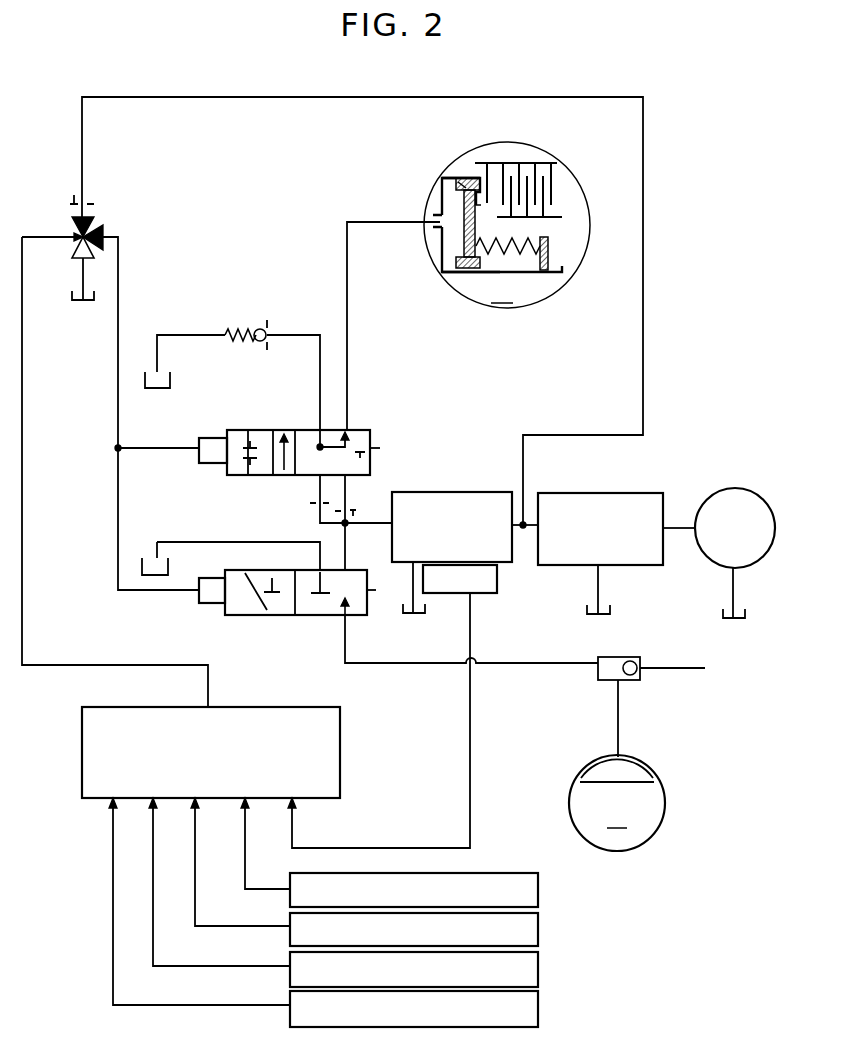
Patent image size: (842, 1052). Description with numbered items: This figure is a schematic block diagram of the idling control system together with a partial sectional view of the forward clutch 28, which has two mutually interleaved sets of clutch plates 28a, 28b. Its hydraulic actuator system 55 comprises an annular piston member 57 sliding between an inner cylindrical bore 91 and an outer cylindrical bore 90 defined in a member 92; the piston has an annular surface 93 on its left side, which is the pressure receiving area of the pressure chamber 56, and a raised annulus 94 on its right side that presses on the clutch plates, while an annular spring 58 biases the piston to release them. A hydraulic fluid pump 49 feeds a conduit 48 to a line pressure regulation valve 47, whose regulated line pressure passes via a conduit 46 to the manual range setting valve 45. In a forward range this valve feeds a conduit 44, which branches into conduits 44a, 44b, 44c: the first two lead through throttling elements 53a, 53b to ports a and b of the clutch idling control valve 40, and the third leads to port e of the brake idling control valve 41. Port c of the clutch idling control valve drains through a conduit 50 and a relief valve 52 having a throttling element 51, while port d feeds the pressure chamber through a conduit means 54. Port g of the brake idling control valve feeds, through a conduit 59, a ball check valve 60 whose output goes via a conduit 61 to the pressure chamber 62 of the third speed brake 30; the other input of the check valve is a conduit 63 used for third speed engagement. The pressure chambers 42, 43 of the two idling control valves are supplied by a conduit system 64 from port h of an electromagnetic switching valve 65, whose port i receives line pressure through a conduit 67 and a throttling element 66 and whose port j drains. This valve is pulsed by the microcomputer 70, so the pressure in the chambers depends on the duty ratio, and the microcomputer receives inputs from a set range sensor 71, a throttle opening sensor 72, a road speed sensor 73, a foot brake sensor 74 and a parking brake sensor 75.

The forward hydraulic clutch 28 is at (507, 226).
The set of annular clutch plates 28a is at (545, 178).
The set of annular clutch plates 28b is at (550, 204).
The third speed brake 30 is at (640, 791).
The clutch idling control valve 40 is at (372, 435).
The brake idling control valve 41 is at (314, 616).
The pressure chamber 42 is at (212, 465).
The pressure chamber 43 is at (212, 604).
The conduit 44 is at (376, 523).
The conduit 44a is at (312, 497).
The conduit 44b is at (374, 462).
The conduit 44c is at (370, 560).
The manual range setting valve 45 is at (498, 492).
The conduit 46 is at (526, 530).
The line pressure regulation valve 47 is at (590, 493).
The conduit 48 is at (684, 525).
The hydraulic fluid pump 49 is at (736, 488).
The conduit 50 is at (320, 381).
The throttling element 51 is at (270, 330).
The relief valve 52 is at (238, 338).
The throttling element 53a is at (310, 508).
The throttling element 53b is at (346, 528).
The conduit means 54 is at (348, 368).
The hydraulic actuator system 55 is at (466, 176).
The pressure chamber 56 is at (442, 245).
The annular piston member 57 is at (458, 183).
The annular spring 58 is at (542, 262).
The conduit 59 is at (456, 666).
The ball check valve 60 is at (634, 676).
The conduit 61 is at (618, 716).
The pressure chamber 62 is at (636, 776).
The conduit 63 is at (671, 667).
The conduit system 64 is at (118, 400).
The electromagnetic switching valve 65 is at (86, 225).
The throttling element 66 is at (74, 195).
The conduit 67 is at (165, 97).
The microcomputer 70 is at (340, 758).
The set range sensor 71 is at (483, 594).
The throttle opening sensor 72 is at (540, 890).
The road speed sensor 73 is at (540, 930).
The foot brake sensor 74 is at (540, 972).
The parking brake sensor 75 is at (540, 1013).
The outer cylindrical bore 90 is at (450, 178).
The inner cylindrical bore 91 is at (456, 263).
The member 92 is at (470, 273).
The annular surface 93 is at (464, 218).
The raised annulus 94 is at (476, 178).